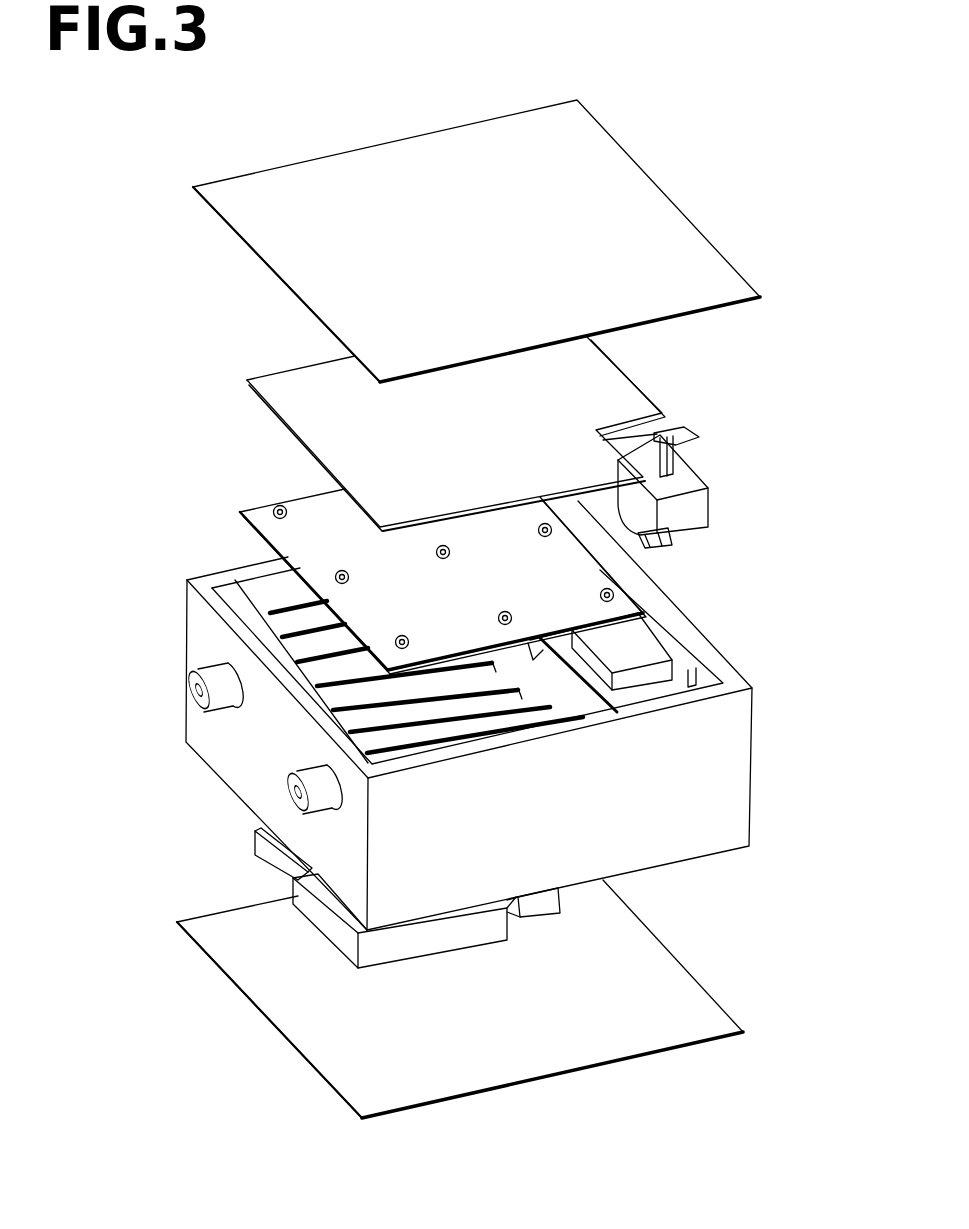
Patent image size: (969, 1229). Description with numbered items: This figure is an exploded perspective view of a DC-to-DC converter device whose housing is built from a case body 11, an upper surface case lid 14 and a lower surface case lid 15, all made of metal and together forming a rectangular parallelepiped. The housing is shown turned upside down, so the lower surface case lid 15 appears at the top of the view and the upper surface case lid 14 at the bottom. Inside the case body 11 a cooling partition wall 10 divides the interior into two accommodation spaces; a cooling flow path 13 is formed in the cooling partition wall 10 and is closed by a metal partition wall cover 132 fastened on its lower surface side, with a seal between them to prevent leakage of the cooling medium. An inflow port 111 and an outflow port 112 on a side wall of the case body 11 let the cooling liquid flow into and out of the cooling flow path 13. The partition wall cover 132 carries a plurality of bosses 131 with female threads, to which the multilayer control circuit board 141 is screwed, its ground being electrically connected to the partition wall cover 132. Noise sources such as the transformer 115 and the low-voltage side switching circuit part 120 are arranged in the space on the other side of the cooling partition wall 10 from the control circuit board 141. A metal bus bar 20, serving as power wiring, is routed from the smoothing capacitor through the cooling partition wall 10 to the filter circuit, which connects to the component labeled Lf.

The lower surface case lid 15 is at (503, 130).
The control circuit board 141 is at (290, 382).
The partition wall cover 132 is at (320, 512).
The bosses 131 is at (272, 503).
The cooling partition wall 10 is at (240, 585).
The case body 11 is at (713, 757).
The cooling flow path 13 is at (588, 685).
The inflow port 111 is at (205, 672).
The outflow port 112 is at (292, 784).
The transformer 115 is at (272, 862).
The low-voltage side switching circuit part 120 is at (317, 918).
The upper surface case lid 14 is at (682, 1003).
The lead frame connector Lf is at (685, 498).
The metal bus bar 20 is at (697, 425).